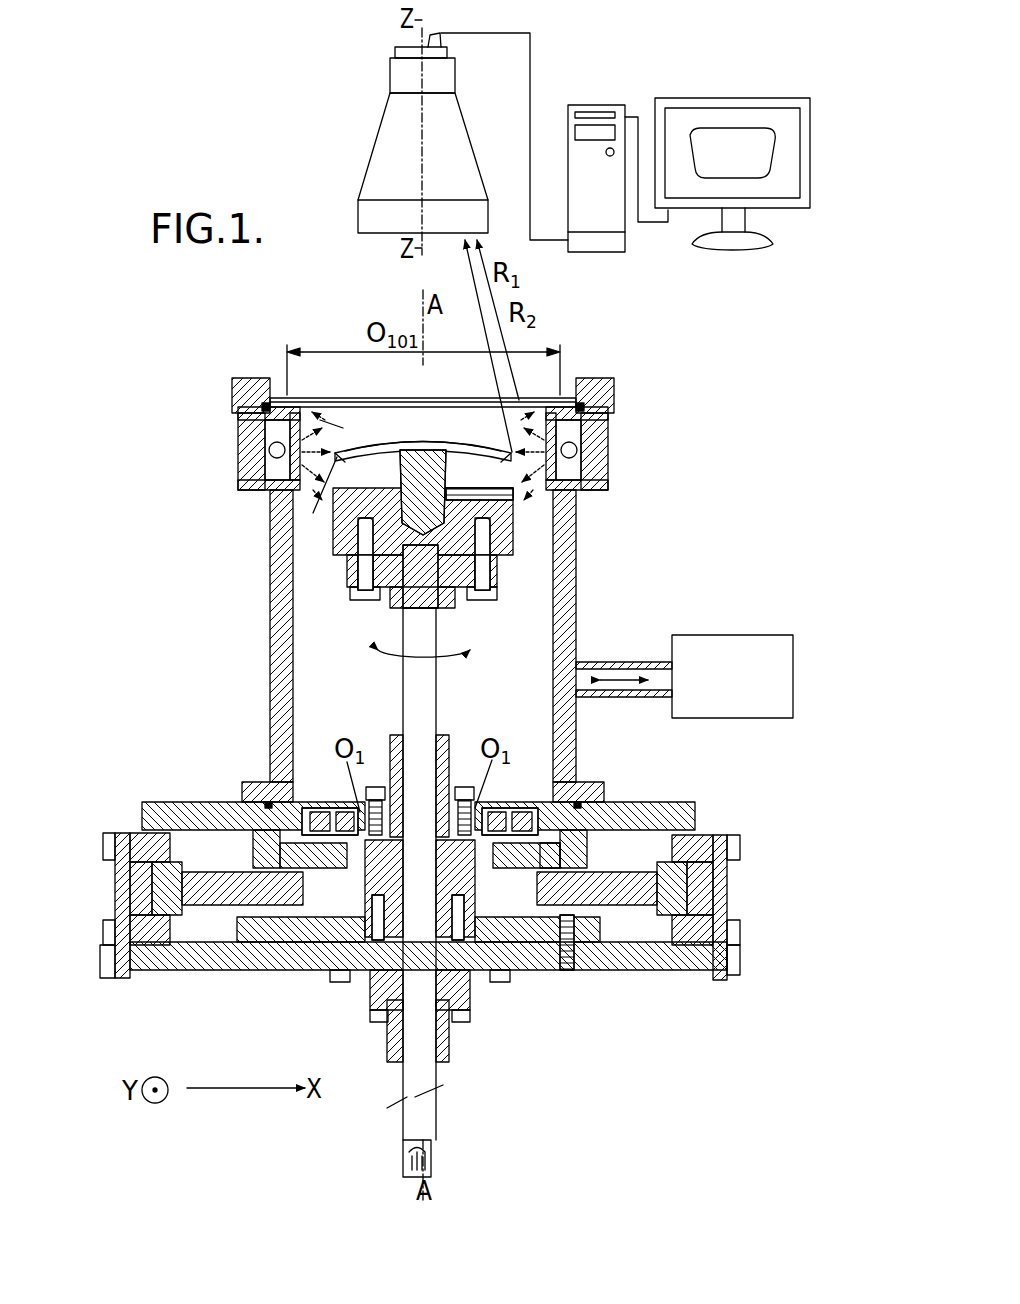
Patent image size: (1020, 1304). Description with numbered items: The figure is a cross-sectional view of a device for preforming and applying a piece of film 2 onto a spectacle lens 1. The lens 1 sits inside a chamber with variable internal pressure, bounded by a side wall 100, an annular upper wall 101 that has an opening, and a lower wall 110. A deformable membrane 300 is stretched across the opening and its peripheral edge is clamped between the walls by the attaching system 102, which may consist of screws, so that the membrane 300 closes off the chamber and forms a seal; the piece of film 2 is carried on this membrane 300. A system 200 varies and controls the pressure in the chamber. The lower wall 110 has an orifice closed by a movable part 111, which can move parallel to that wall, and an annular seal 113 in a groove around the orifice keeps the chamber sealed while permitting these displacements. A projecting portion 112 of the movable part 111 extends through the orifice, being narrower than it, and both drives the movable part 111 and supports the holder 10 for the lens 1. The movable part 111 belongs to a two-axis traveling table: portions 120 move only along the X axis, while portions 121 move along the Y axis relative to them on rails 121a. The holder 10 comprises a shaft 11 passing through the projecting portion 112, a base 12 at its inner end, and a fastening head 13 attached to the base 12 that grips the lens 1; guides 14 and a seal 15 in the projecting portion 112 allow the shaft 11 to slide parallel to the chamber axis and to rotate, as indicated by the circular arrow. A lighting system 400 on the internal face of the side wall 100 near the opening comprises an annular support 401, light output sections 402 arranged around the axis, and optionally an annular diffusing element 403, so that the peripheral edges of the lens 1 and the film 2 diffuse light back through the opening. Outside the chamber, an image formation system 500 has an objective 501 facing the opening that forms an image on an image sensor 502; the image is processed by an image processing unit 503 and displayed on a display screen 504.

The lens 1 is at (423, 447).
The piece of film 2 is at (463, 400).
The holder 10 is at (630, 482).
The shaft 11 is at (427, 631).
The base 12 is at (498, 537).
The fastening head 13 is at (455, 492).
The guides 14 is at (392, 745).
The seal 15 is at (414, 828).
The side wall 100 is at (278, 580).
The upper wall 101 is at (240, 397).
The system for attaching a deformable membrane 102 is at (252, 380).
The lower wall 110 is at (188, 815).
The movable part 111 is at (340, 818).
The projecting portion 112 is at (348, 888).
The annular seal 113 is at (560, 848).
The portions movable along the X axis 120 is at (237, 893).
The portions movable along the Y axis 121 is at (150, 925).
The rails 121a is at (150, 884).
The system for varying and controlling the pressure 200 is at (748, 665).
The deformable membrane 300 is at (353, 397).
The lighting system 400 is at (160, 432).
The support 401 is at (262, 432).
The light output sections 402 is at (276, 452).
The diffusing element 403 is at (300, 482).
The image formation system 500 is at (738, 47).
The objective 501 is at (473, 140).
The image sensor 502 is at (437, 38).
The image processing unit 503 is at (600, 105).
The display screen 504 is at (697, 98).